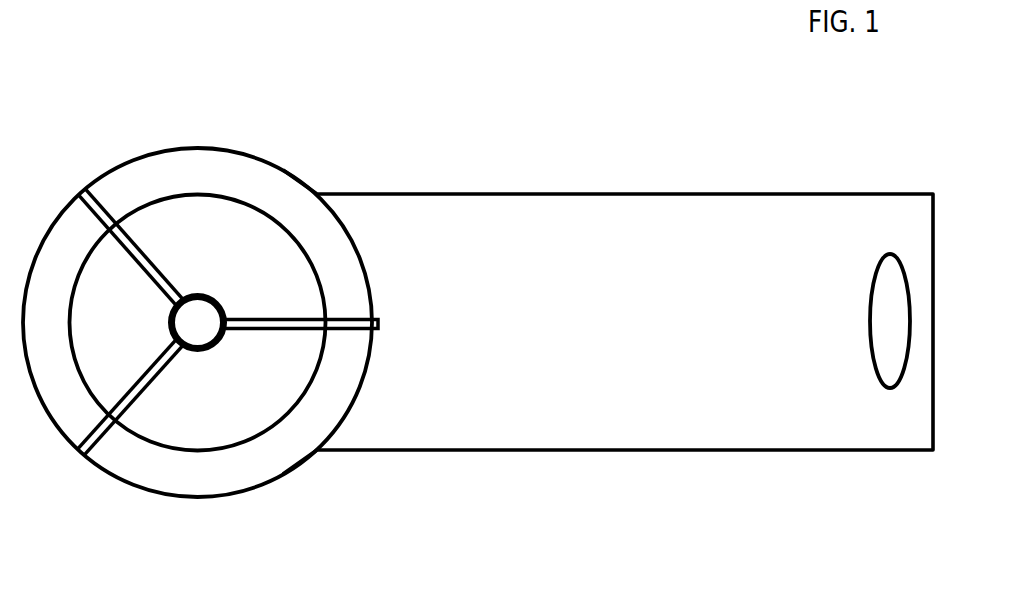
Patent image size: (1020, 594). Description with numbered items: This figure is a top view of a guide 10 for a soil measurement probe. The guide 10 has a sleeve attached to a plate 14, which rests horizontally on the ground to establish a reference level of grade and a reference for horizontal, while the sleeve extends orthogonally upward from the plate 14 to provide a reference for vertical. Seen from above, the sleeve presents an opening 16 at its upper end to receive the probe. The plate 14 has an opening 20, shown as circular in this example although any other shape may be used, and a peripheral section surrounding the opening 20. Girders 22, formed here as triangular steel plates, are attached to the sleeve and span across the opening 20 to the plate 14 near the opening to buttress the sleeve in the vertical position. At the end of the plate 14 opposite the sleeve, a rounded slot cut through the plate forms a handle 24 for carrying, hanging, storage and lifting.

The guide 10 is at (486, 165).
The plate 14 is at (625, 303).
The opening 16 is at (198, 323).
The opening 20 is at (229, 382).
The girders 22 is at (101, 197).
The handle 24 is at (886, 305).